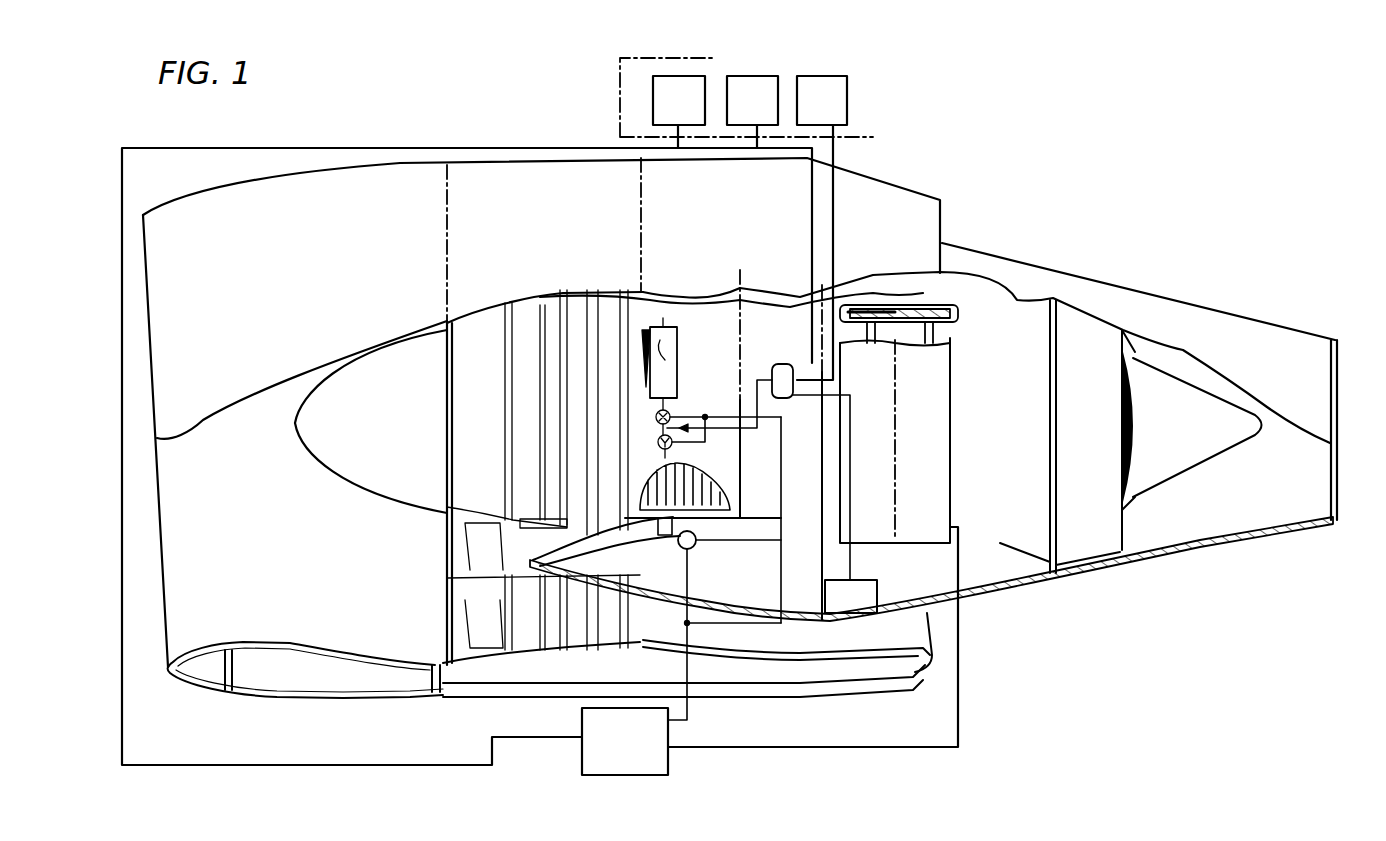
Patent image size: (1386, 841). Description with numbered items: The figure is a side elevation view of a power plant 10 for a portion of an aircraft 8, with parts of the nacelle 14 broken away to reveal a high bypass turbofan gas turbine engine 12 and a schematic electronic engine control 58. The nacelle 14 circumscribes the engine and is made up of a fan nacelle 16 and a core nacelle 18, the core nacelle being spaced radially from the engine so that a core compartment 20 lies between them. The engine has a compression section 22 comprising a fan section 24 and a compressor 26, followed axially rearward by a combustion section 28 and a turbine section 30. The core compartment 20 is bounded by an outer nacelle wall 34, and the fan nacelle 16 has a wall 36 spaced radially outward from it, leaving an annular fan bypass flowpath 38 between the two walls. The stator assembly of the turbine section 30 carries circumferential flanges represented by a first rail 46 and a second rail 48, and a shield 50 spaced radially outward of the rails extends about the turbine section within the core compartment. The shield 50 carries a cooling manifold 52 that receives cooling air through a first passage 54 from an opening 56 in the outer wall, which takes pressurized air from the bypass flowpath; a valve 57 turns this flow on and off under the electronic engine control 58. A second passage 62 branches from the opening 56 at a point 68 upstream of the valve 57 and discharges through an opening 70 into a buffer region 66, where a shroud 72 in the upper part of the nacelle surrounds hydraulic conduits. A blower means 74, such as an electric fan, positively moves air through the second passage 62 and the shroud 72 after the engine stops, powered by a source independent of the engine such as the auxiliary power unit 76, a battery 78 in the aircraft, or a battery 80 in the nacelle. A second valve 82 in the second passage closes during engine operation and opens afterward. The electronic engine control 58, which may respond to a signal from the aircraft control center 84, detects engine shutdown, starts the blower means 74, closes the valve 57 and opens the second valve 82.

The aircraft 8 is at (618, 65).
The power plant 10 is at (1018, 125).
The turbofan gas turbine engine 12 is at (327, 568).
The nacelle 14 is at (953, 237).
The fan nacelle 16 is at (768, 213).
The core nacelle 18 is at (1006, 288).
The core compartment 20 is at (1003, 583).
The compression section 22 is at (742, 224).
The fan section 24 is at (534, 272).
The compressor 26 is at (740, 272).
The combustion section 28 is at (818, 280).
The turbine section 30 is at (950, 553).
The outer nacelle wall 34 is at (340, 493).
The wall 36 is at (360, 640).
The fan bypass flowpath 38 is at (837, 633).
The first rail 46 is at (882, 340).
The second rail 48 is at (917, 347).
The shield 50 is at (935, 303).
The cooling manifold 52 is at (893, 307).
The first passage 54 is at (733, 540).
The opening 56 is at (578, 578).
The valve 57 is at (693, 549).
The electronic engine control 58 is at (600, 758).
The second passage 62 is at (693, 532).
The buffer region 66 is at (663, 328).
The point 68 is at (667, 537).
The opening 70 is at (663, 362).
The shroud 72 is at (677, 382).
The blower means 74 is at (656, 418).
The auxiliary power unit 76 is at (738, 115).
The battery 78 is at (808, 115).
The battery 80 is at (838, 609).
The second valve 82 is at (658, 446).
The control center 84 is at (665, 115).